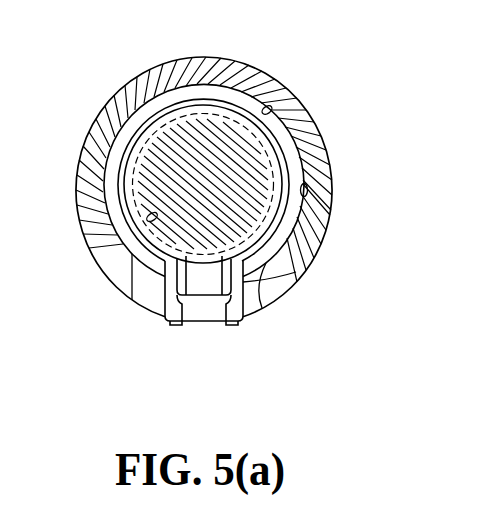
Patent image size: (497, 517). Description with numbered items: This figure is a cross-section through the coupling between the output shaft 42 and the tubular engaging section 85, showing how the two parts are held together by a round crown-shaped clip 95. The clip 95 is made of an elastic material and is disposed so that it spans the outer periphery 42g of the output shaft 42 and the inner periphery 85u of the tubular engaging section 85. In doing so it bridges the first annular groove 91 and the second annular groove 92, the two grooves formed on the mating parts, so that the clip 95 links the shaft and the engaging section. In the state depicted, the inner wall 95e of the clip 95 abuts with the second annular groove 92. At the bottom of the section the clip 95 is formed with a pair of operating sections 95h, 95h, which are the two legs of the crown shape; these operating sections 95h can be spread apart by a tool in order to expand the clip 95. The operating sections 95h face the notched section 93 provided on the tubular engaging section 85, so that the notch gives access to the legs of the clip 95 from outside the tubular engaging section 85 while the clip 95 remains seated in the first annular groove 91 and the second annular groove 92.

The tubular engaging section 85 is at (292, 110).
The inner periphery of the tubular engaging section 85u is at (204, 187).
The first annular groove 91 is at (301, 203).
The second annular groove 92 is at (287, 220).
The notched section 93 is at (258, 296).
The output shaft 42 is at (243, 178).
The outer periphery of the output shaft 42g is at (273, 112).
The clip 95 is at (274, 238).
The inner wall of the clip 95e is at (156, 214).
The operating section 95h is at (175, 325).